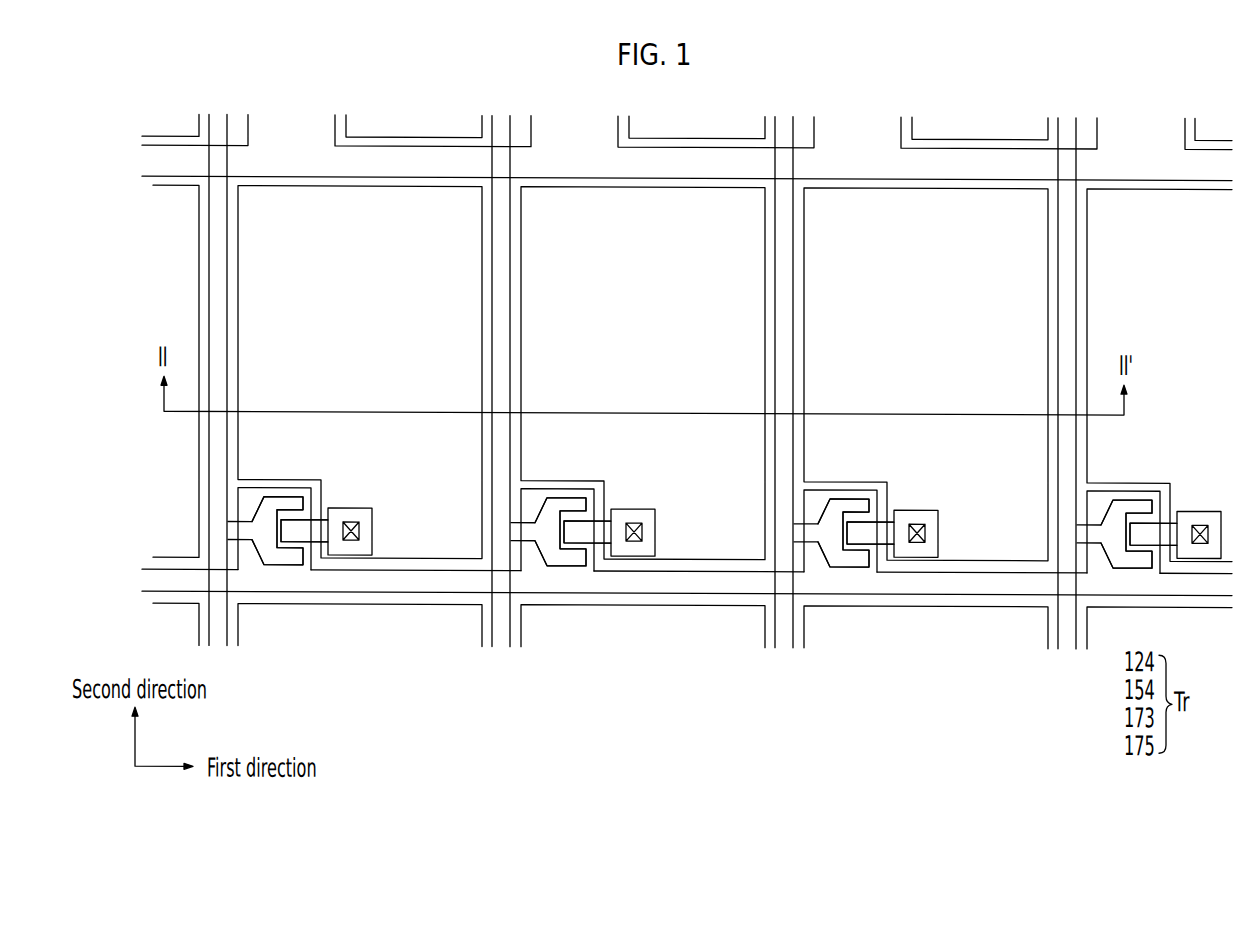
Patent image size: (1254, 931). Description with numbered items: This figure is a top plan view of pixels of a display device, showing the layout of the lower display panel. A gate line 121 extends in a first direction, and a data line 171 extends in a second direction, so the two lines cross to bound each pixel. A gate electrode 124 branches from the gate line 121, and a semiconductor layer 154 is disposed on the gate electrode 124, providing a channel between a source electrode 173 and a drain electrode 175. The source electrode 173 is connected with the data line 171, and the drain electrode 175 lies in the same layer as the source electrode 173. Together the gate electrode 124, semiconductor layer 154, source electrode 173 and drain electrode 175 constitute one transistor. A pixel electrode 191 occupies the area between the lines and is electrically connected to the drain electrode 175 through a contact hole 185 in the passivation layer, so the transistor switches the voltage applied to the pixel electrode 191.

The gate line 121 is at (646, 596).
The gate electrode 124 is at (238, 498).
The semiconductor layer 154 is at (300, 550).
The data line 171 is at (209, 315).
The source electrode 173 is at (268, 542).
The drain electrode 175 is at (318, 497).
The contact hole 185 is at (358, 532).
The pixel electrode 191 is at (240, 253).